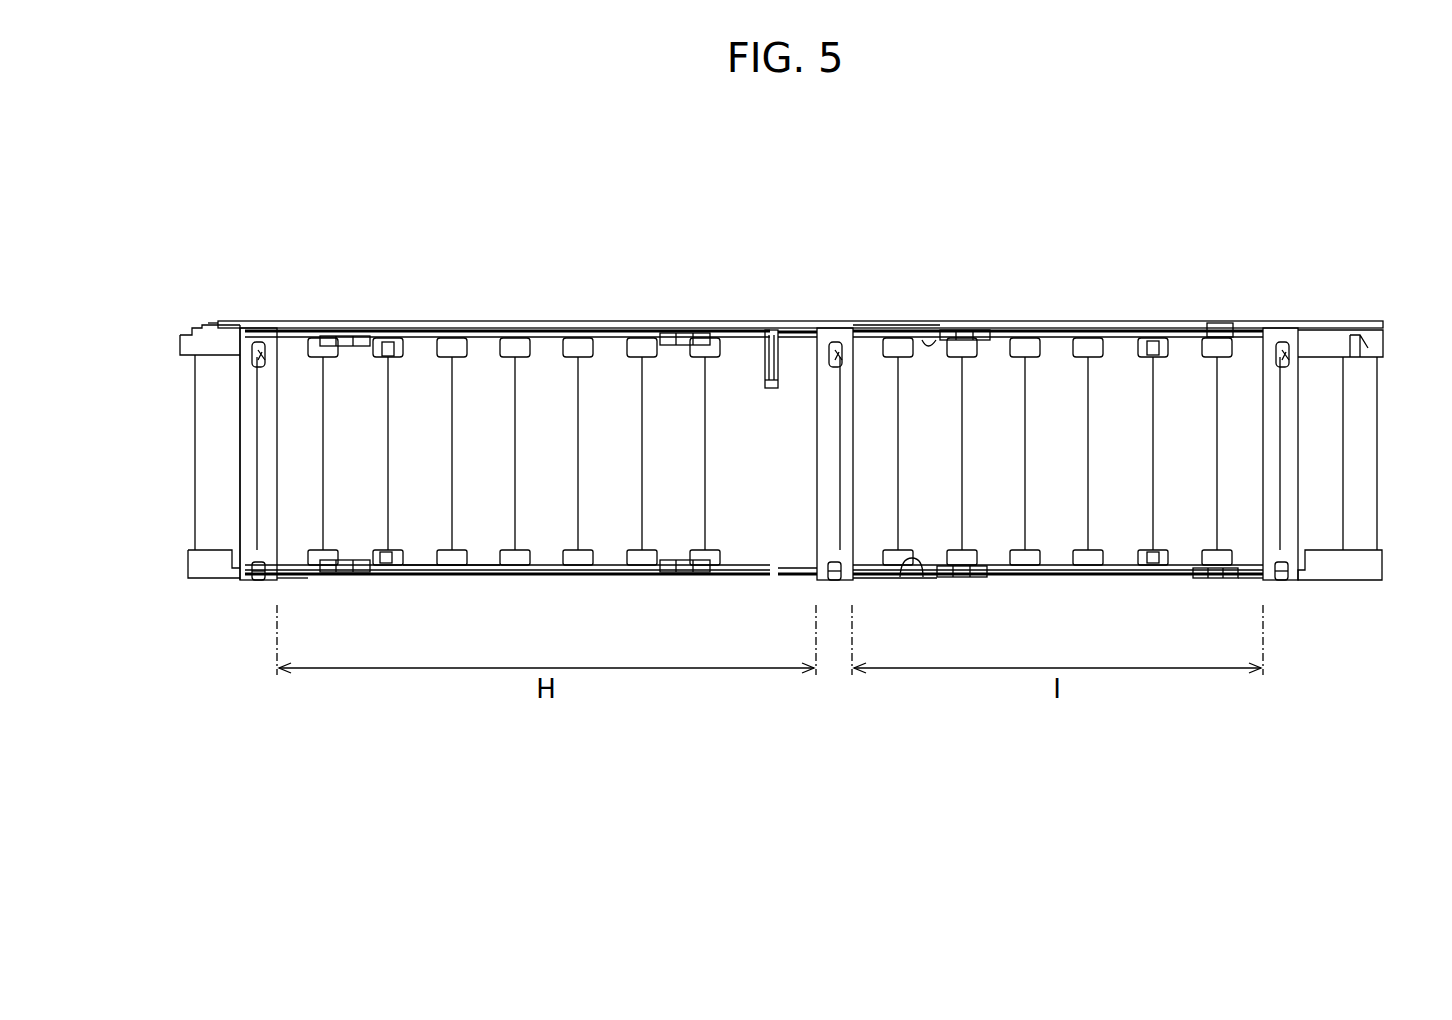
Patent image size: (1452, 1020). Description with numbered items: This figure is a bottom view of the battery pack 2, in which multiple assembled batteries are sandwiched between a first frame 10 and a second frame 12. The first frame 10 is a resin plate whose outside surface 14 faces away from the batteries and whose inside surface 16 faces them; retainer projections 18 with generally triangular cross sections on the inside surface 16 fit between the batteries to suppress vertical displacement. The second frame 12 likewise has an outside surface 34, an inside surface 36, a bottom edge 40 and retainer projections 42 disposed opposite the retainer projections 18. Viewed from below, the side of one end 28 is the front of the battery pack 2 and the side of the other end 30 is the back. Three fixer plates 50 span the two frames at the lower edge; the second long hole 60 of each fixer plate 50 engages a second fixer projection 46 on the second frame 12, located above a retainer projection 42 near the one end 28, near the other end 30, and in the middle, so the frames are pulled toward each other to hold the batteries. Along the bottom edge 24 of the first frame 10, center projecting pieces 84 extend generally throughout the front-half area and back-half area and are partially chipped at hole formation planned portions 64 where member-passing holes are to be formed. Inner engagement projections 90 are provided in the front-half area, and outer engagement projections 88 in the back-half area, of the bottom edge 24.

The battery pack 2 is at (1383, 247).
The first frame 10 is at (305, 584).
The second frame 12 is at (222, 321).
The outside surface 14 is at (920, 573).
The inside surface 16 is at (900, 577).
The retainer projections 18 is at (455, 565).
The bottom edge 24 is at (1250, 574).
The one end 28 is at (195, 480).
The other end 30 is at (1378, 477).
The outside surface 34 is at (905, 321).
The inside surface 36 is at (930, 345).
The bottom edge 40 is at (615, 330).
The retainer projections 42 is at (443, 338).
The second fixer projections 46 is at (258, 344).
The fixer plates 50 is at (257, 420).
The second long hole 60 is at (266, 350).
The hole formation planned portions 64 is at (395, 338).
The center projecting pieces 84 is at (487, 331).
The outer engagement projections 88 is at (960, 331).
The inner engagement projections 90 is at (348, 336).